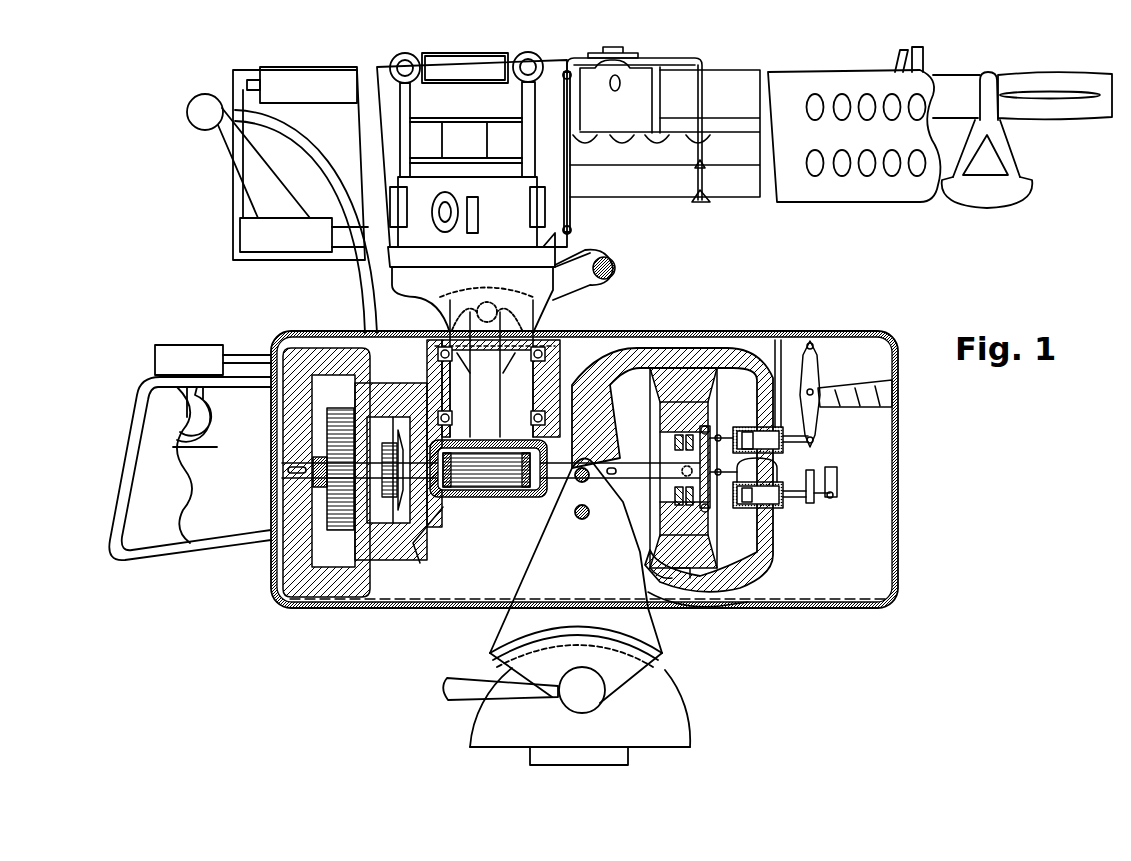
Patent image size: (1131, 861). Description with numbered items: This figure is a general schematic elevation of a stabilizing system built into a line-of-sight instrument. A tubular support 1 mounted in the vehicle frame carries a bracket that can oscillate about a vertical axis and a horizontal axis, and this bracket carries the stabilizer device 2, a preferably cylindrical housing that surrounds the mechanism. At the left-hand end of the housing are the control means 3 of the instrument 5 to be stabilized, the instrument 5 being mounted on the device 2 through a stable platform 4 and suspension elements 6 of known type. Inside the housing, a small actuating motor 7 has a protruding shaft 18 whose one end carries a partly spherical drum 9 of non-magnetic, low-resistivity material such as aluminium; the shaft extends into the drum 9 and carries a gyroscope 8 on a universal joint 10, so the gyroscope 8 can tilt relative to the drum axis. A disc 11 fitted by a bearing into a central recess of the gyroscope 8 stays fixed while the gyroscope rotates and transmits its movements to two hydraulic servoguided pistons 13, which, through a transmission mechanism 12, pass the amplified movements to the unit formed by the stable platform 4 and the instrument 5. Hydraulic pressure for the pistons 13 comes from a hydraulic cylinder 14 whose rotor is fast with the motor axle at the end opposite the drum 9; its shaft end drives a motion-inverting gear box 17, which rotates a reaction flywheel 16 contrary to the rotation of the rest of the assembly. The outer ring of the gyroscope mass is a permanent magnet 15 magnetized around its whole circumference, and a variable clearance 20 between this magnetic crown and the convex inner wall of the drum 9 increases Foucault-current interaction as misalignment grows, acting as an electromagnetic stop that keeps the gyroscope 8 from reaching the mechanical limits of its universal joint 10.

The tubular support 1 is at (622, 757).
The stabilizer device 2 is at (903, 468).
The control means 3 is at (203, 420).
The stable platform 4 is at (640, 278).
The instrument 5 is at (832, 204).
The suspension elements 6 is at (493, 367).
The actuating motor 7 is at (487, 490).
The gyroscope 8 is at (705, 522).
The partly spherical drum 9 is at (735, 352).
The universal joint 10 is at (712, 500).
The disc 11 is at (720, 438).
The transmission mechanism 12 is at (815, 362).
The hydraulic servoguided pistons 13 is at (783, 450).
The hydraulic cylinder 14 is at (447, 506).
The permanent magnet 15 is at (705, 597).
The reaction flywheel 16 is at (290, 573).
The motion-inverting gear box 17 is at (338, 530).
The shaft 18 is at (576, 556).
The variable clearance 20 is at (735, 580).